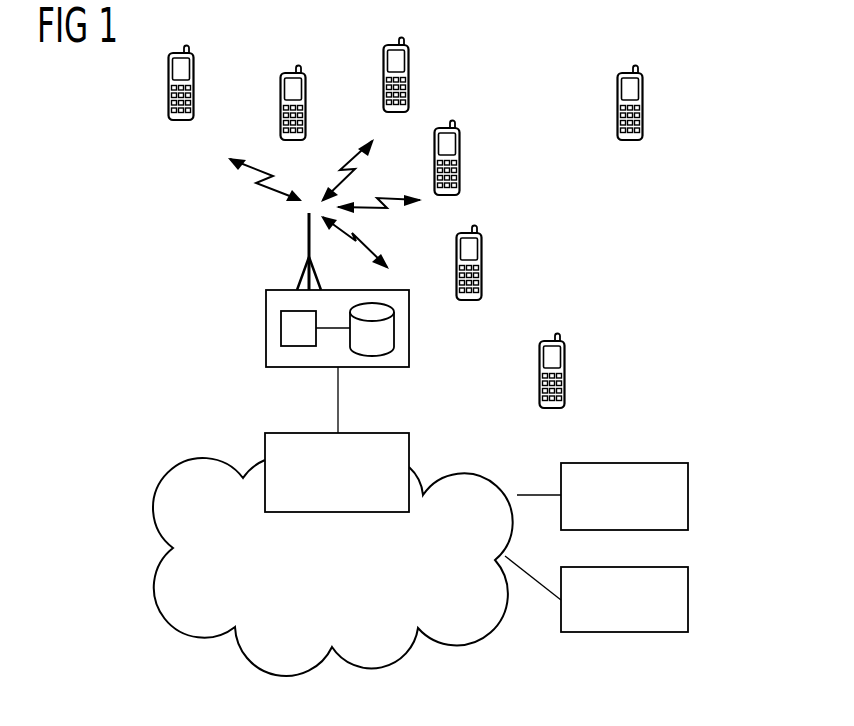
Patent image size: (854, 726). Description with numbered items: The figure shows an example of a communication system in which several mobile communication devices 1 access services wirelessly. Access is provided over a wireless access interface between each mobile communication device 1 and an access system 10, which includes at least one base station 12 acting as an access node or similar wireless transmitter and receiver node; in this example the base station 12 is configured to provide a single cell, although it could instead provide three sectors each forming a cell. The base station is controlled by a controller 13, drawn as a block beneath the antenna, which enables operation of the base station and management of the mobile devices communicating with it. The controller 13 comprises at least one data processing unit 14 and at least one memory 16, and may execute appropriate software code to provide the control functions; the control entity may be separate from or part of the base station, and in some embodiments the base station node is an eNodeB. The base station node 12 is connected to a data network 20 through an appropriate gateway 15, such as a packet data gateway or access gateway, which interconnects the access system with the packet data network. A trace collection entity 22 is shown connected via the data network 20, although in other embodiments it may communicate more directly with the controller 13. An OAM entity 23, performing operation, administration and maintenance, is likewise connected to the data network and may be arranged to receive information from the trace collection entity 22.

The mobile communication device 1 is at (482, 265).
The access system 10 is at (186, 239).
The base station 12 is at (307, 240).
The controller 13 is at (329, 331).
The data processing unit 14 is at (281, 320).
The gateway 15 is at (265, 444).
The memory 16 is at (394, 327).
The data network 20 is at (155, 512).
The trace collection entity 22 is at (688, 496).
The OAM entity 23 is at (688, 600).